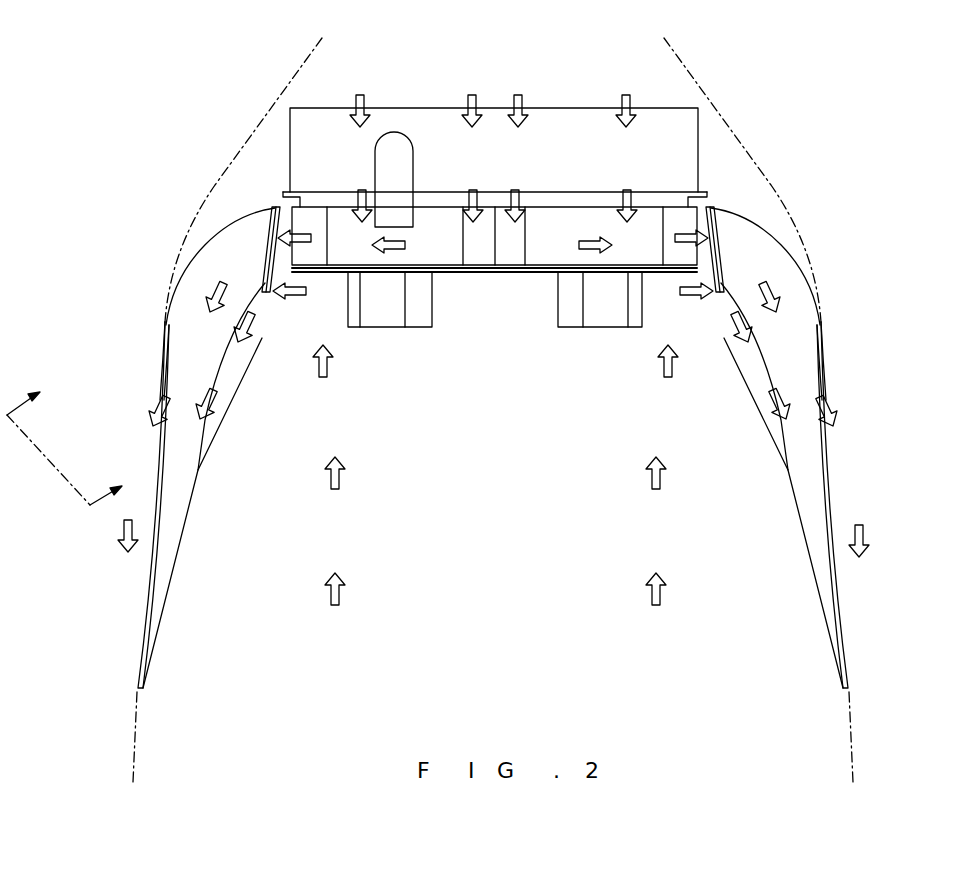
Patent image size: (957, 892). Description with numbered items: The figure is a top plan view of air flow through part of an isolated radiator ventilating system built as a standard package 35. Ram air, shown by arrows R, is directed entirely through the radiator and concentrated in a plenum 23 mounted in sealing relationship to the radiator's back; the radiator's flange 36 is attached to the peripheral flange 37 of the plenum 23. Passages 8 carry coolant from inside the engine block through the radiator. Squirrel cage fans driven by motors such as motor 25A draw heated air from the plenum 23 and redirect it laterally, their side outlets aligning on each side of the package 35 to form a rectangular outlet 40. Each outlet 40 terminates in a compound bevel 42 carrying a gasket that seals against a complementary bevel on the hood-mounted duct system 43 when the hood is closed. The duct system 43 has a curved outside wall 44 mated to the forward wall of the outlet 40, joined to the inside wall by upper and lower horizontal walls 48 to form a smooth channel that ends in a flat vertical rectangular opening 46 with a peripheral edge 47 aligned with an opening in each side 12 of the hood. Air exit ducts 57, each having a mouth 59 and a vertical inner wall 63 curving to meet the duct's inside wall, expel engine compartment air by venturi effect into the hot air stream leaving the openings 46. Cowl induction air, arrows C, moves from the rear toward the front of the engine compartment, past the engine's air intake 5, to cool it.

The passages 8 is at (390, 167).
The plenum 23 is at (673, 197).
The peripheral flange 37 is at (288, 199).
The flange 36 is at (700, 193).
The compound bevel 42 is at (265, 207).
The rectangular outlet 40 is at (292, 265).
The motor 25A is at (383, 318).
The sides 12 is at (200, 198).
The curved outside wall 44 is at (210, 248).
The duct system 43 is at (790, 250).
The rectangular opening 46 is at (167, 330).
The peripheral edge 47 is at (144, 595).
The horizontal walls 48 is at (193, 370).
The vertical inner wall 63 is at (240, 375).
The mouths 59 is at (258, 332).
The air exit ducts 57 is at (233, 413).
The standard package 35 is at (500, 332).
The air intake 5 is at (72, 438).
The ram air R is at (493, 95).
The cowl induction air C is at (340, 597).